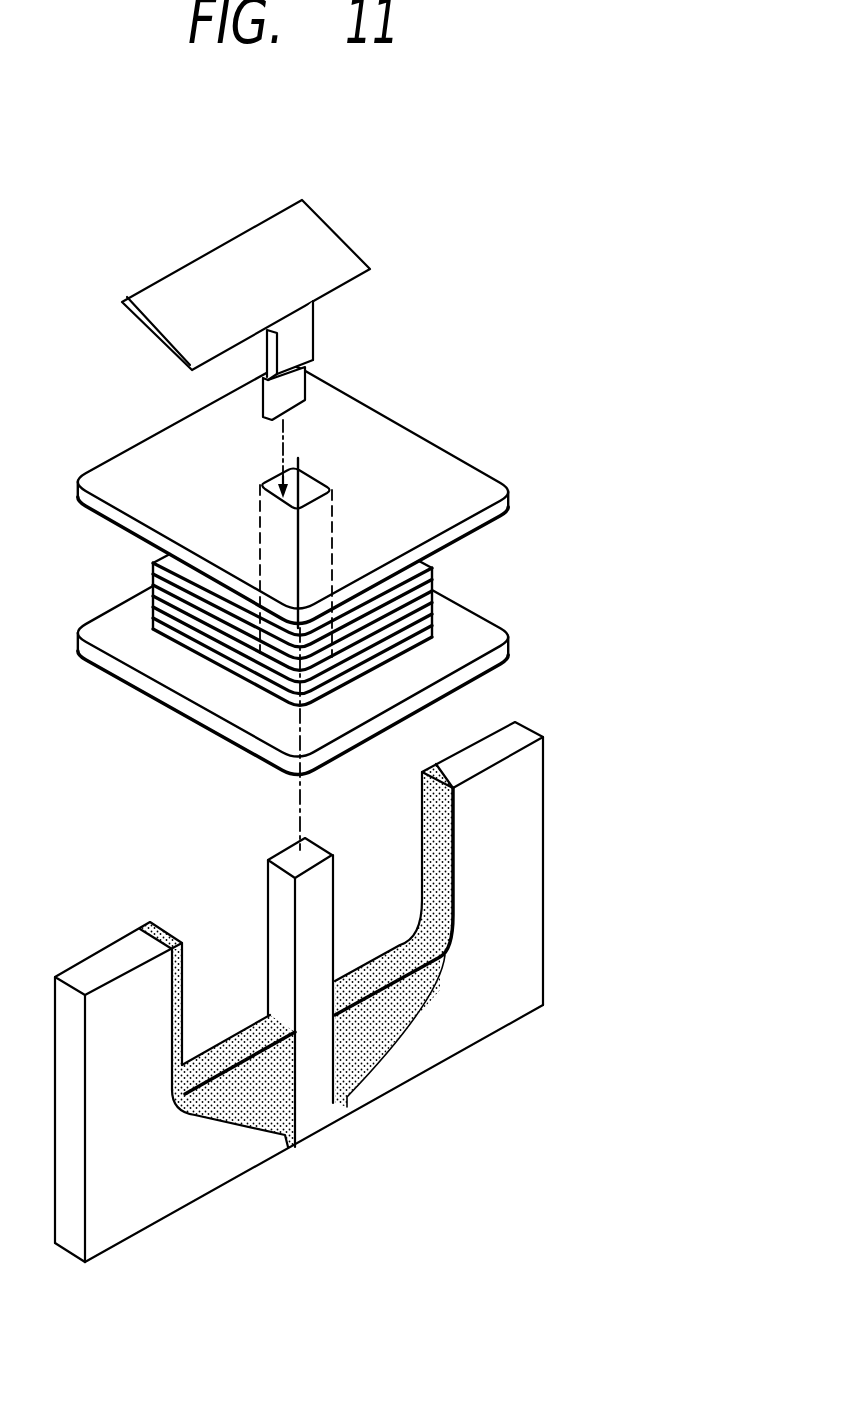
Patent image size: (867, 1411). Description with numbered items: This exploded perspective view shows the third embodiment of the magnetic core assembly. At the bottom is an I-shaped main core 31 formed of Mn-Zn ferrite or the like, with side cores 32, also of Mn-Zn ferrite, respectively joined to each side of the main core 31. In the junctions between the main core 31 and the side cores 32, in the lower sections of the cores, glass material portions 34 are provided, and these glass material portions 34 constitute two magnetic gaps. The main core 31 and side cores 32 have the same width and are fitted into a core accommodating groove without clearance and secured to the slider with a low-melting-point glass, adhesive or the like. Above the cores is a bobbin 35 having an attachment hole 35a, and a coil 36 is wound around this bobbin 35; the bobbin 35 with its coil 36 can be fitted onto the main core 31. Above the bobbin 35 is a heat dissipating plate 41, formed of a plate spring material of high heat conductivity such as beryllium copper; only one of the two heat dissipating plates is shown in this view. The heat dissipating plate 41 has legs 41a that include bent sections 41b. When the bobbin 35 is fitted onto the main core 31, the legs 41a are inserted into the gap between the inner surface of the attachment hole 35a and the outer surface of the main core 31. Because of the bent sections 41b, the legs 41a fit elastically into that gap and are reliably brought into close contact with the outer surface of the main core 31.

The main core 31 is at (323, 1113).
The side cores 32 is at (505, 1017).
The glass material portions 34 is at (388, 1033).
The bobbin 35 is at (407, 450).
The attachment hole 35a is at (307, 487).
The coil 36 is at (422, 598).
The heat dissipating plate 41 is at (345, 232).
The legs 41a is at (305, 347).
The bent sections 41b is at (288, 380).